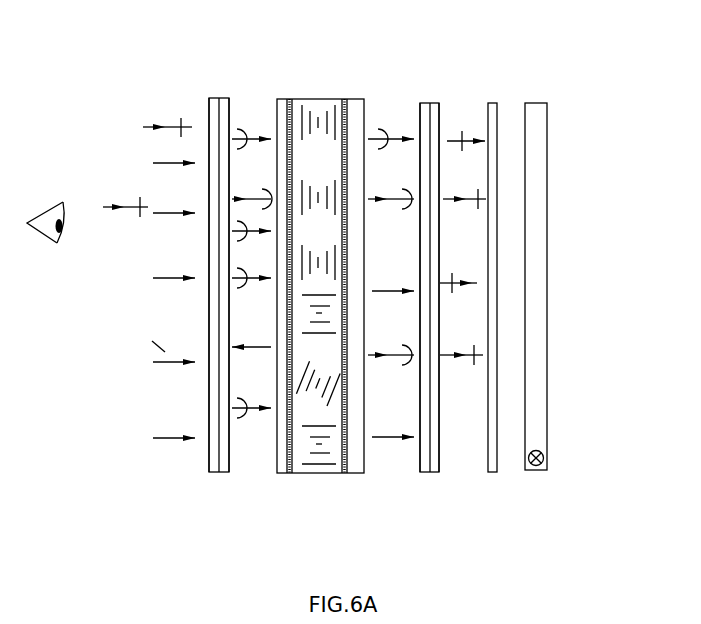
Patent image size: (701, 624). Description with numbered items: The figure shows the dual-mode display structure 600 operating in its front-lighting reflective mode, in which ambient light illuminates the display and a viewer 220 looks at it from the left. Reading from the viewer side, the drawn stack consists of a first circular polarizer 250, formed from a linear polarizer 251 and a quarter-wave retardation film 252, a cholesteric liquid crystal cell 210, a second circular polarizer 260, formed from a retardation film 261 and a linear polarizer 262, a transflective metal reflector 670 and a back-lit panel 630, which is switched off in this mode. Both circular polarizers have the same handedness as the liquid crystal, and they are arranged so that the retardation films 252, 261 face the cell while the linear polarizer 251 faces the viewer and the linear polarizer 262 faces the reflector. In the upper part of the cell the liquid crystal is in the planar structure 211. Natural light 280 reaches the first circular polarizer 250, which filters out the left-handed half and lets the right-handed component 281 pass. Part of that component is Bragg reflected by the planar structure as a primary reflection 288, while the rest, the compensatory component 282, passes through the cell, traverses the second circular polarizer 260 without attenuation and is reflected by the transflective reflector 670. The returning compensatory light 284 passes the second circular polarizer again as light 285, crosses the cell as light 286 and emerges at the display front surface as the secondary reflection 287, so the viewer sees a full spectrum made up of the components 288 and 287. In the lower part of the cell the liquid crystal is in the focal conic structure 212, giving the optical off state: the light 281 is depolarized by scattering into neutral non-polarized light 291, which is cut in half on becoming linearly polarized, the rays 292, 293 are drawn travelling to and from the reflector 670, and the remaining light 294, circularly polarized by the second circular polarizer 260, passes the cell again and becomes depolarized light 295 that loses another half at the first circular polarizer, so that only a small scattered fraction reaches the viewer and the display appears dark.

The display system 600 is at (313, 282).
The viewer 220 is at (48, 252).
The first circular polarizer 250 is at (214, 92).
The linear polarizer 251 is at (208, 486).
The quarter-wave retardation film 252 is at (225, 482).
The cholesteric liquid crystal cell 210 is at (315, 97).
The planar structure 211 is at (320, 192).
The focal conic structure 212 is at (303, 445).
The second circular polarizer 260 is at (431, 100).
The quarter-wave retardation film 261 is at (418, 488).
The linear polarizer 262 is at (430, 489).
The transflective metal reflector 670 is at (492, 100).
The back-lit panel 630 is at (556, 130).
The natural light 280 is at (170, 287).
The right handed light component 281 is at (253, 130).
The compensatory component 282 is at (396, 128).
The compensatory light 284 is at (464, 184).
The light passing second circular polarizer 285 is at (388, 195).
The light passing ChLC film 286 is at (251, 183).
The secondary reflective component 287 is at (131, 197).
The primary reflective component 288 is at (166, 120).
The neutral non-polarized light 291 is at (384, 285).
The light ray 292 is at (456, 278).
The light ray 293 is at (458, 350).
The remaining light 294 is at (383, 348).
The depolarized light 295 is at (246, 338).